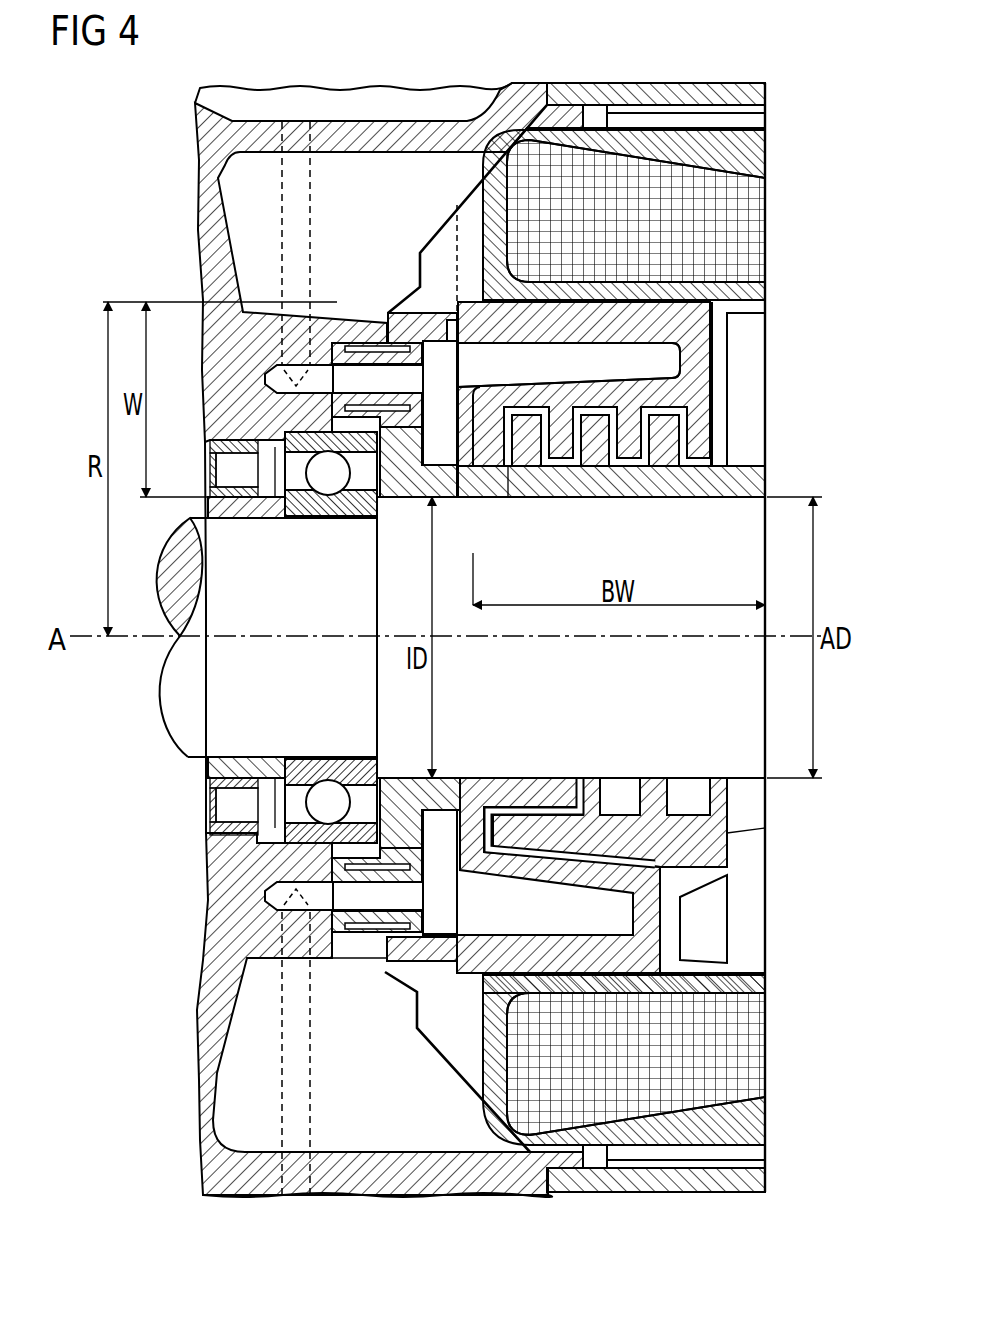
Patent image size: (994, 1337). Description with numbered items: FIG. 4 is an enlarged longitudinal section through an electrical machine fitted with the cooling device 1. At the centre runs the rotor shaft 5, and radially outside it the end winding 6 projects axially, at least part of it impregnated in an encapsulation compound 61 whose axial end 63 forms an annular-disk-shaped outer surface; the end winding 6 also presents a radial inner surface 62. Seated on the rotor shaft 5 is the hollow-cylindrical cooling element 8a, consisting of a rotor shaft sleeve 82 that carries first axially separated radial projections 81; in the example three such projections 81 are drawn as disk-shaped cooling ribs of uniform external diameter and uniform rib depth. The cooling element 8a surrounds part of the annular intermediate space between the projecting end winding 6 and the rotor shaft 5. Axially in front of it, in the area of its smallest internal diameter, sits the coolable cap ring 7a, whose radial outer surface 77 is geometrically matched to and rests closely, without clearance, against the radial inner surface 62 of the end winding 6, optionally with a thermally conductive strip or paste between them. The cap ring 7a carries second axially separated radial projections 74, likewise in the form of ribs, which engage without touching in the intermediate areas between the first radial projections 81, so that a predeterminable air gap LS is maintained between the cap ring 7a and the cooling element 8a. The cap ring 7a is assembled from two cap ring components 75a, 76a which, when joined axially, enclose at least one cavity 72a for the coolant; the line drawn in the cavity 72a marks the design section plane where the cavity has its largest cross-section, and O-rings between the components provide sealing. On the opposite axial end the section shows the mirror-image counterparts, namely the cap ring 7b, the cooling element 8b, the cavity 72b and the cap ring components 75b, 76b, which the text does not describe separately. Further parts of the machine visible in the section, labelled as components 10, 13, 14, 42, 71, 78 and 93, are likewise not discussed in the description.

The cooling device 1 is at (522, 522).
The rotor shaft 5 is at (641, 691).
The end winding 6 is at (755, 225).
The coolable cap ring 7a is at (712, 358).
The stator yoke lower 7b is at (548, 777).
The hollow-cylindrical cooling element 8a is at (597, 500).
The rotor slots lower 8b is at (668, 777).
The bearing 10 is at (320, 517).
The housing bottom plate 13 is at (300, 1183).
The housing top plate 14 is at (300, 158).
The housing shell 42 is at (758, 397).
The encapsulation compound 61 is at (760, 153).
The radial inner surface of the end winding 62 is at (575, 323).
The axial end of the end winding 63 is at (478, 205).
The bearing carrier 71 is at (343, 343).
The cavity 72a is at (537, 383).
The rotor hub lower 72b is at (532, 925).
The second axially separated radial projections 74 is at (722, 456).
The cap ring component 75a is at (418, 500).
The rotor disc lower 75b is at (410, 777).
The cap ring component 76a is at (487, 500).
The rotor rim lower 76b is at (505, 777).
The radial outer surface of the cap ring 77 is at (483, 297).
The fastening bolt 78 is at (305, 236).
The first axially separated radial projections 81 is at (626, 498).
The rotor shaft sleeve 82 is at (722, 500).
The bore axis 93 is at (455, 243).
The air gap LS is at (548, 500).